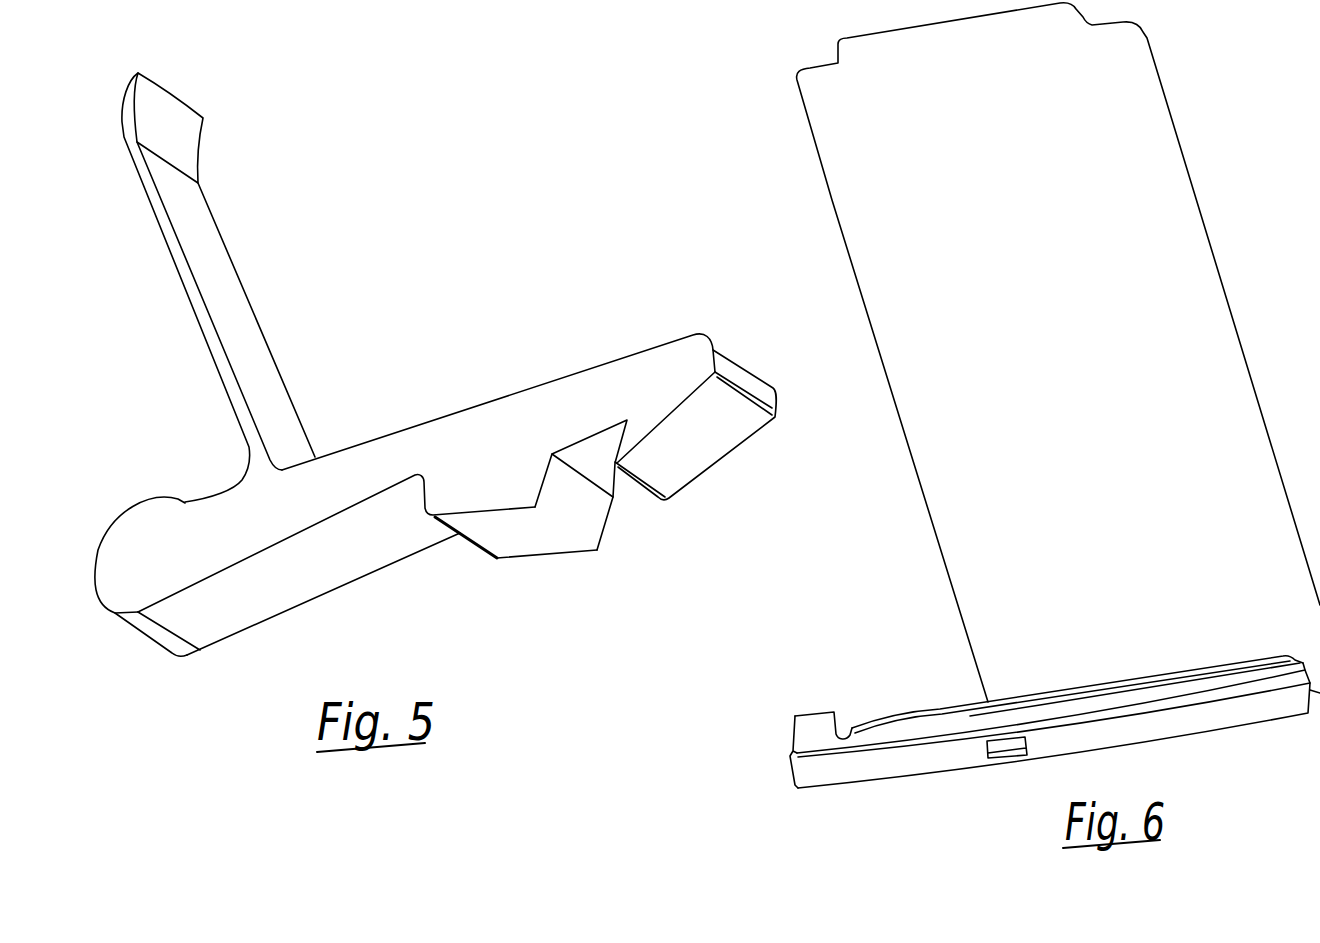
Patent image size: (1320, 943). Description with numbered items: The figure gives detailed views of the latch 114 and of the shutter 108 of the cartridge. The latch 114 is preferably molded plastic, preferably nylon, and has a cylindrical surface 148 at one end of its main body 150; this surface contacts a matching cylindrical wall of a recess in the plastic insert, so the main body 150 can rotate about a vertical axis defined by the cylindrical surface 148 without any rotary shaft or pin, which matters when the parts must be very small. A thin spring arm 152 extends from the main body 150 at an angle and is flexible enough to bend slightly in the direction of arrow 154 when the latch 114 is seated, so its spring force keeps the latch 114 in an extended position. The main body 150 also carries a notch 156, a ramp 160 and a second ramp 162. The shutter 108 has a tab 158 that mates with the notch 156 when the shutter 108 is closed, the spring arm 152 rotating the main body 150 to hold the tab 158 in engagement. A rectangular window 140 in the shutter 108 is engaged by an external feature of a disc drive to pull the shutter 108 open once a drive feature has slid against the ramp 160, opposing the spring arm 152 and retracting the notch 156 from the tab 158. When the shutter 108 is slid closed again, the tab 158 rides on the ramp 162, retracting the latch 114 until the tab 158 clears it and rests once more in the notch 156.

In FIG. 6, the shutter 108 is at (1163, 98).
In FIG. 5, the latch 114 is at (365, 438).
In FIG. 6, the rectangular window 140 is at (1002, 777).
In FIG. 5, the cylindrical surface 148 is at (97, 617).
In FIG. 5, the main body 150 is at (367, 535).
In FIG. 5, the spring arm 152 is at (170, 272).
In FIG. 5, the direction of flexing of spring arm 154 is at (245, 238).
In FIG. 5, the notch 156 is at (636, 526).
In FIG. 6, the tab 158 is at (816, 703).
In FIG. 5, the ramp 160 is at (526, 538).
In FIG. 5, the ramp 162 is at (693, 443).